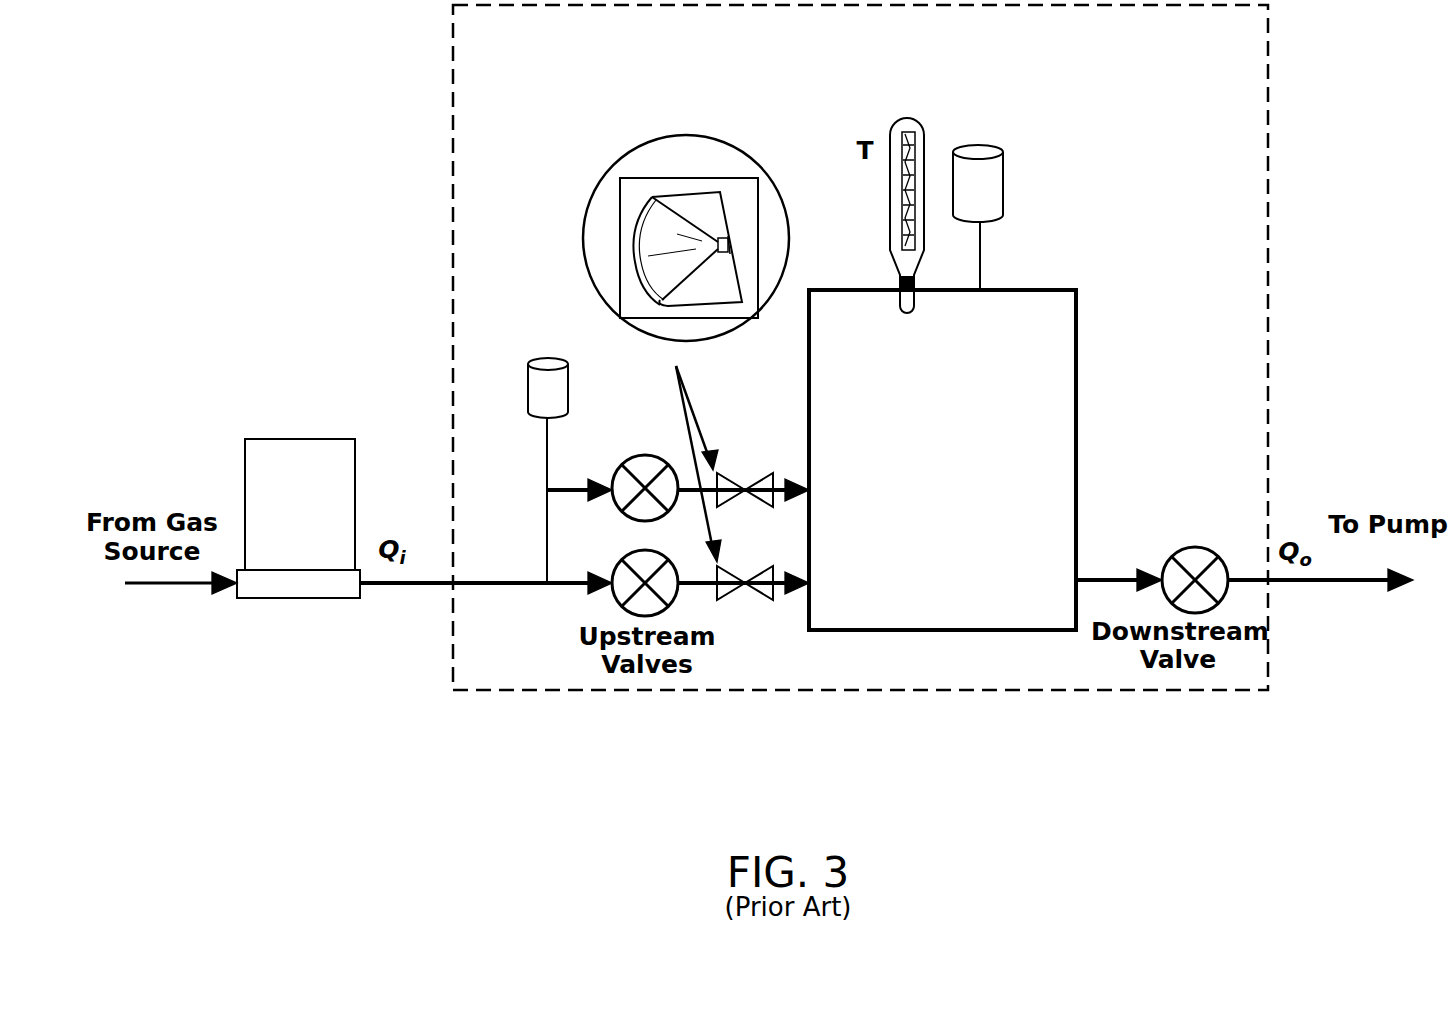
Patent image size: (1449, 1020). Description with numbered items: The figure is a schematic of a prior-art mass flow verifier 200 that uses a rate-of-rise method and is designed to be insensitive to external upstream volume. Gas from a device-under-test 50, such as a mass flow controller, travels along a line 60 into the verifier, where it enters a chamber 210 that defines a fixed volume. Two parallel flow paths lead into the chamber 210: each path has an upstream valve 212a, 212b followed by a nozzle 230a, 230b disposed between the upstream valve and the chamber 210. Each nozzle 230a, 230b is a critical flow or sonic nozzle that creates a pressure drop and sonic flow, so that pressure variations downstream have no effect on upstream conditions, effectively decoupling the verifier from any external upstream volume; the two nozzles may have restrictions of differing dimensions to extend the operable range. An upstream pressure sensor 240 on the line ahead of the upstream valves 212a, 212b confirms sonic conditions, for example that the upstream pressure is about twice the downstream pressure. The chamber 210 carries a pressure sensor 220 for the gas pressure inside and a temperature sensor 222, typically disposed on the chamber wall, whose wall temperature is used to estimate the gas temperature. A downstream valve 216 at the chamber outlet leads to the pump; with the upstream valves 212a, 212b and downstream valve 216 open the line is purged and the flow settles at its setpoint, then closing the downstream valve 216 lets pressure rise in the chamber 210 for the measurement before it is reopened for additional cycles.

The device-under-test 50 is at (302, 438).
The line 60 is at (415, 587).
The mass flow verifier 200 is at (1269, 89).
The chamber 210 is at (950, 632).
The upstream valve 212a is at (643, 455).
The upstream valve 212b is at (610, 597).
The downstream valve 216 is at (1192, 545).
The pressure sensor 220 is at (976, 140).
The temperature sensor 222 is at (908, 113).
The nozzle 230a is at (722, 468).
The nozzle 230b is at (748, 600).
The upstream pressure sensor 240 is at (550, 355).